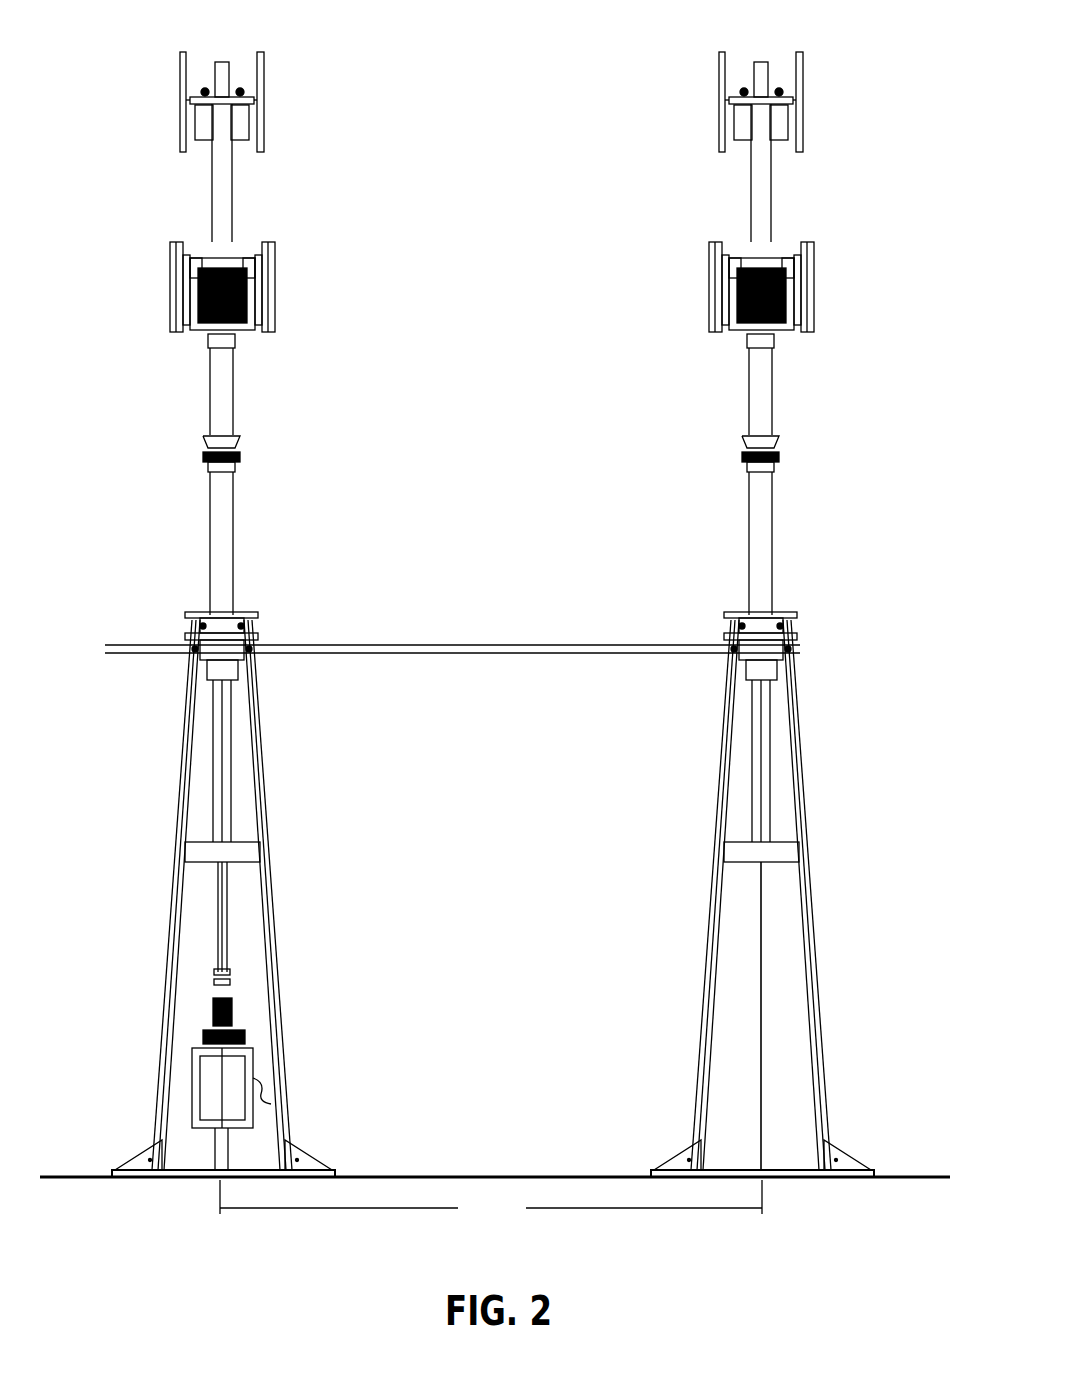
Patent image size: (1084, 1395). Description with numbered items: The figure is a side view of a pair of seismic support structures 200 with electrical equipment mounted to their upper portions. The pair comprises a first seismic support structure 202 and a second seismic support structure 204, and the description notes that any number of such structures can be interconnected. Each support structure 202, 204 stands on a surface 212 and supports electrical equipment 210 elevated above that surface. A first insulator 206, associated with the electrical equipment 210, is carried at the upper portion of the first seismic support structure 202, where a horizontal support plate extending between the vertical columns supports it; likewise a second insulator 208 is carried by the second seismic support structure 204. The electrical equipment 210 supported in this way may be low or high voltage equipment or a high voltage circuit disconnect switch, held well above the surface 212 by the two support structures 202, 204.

The seismic support structures 200 is at (893, 91).
The first seismic support structure 202 is at (289, 747).
The second seismic support structure 204 is at (835, 750).
The first insulator 206 is at (162, 564).
The second insulator 208 is at (761, 333).
The electrical equipment 210 is at (303, 318).
The surface 212 is at (465, 1163).